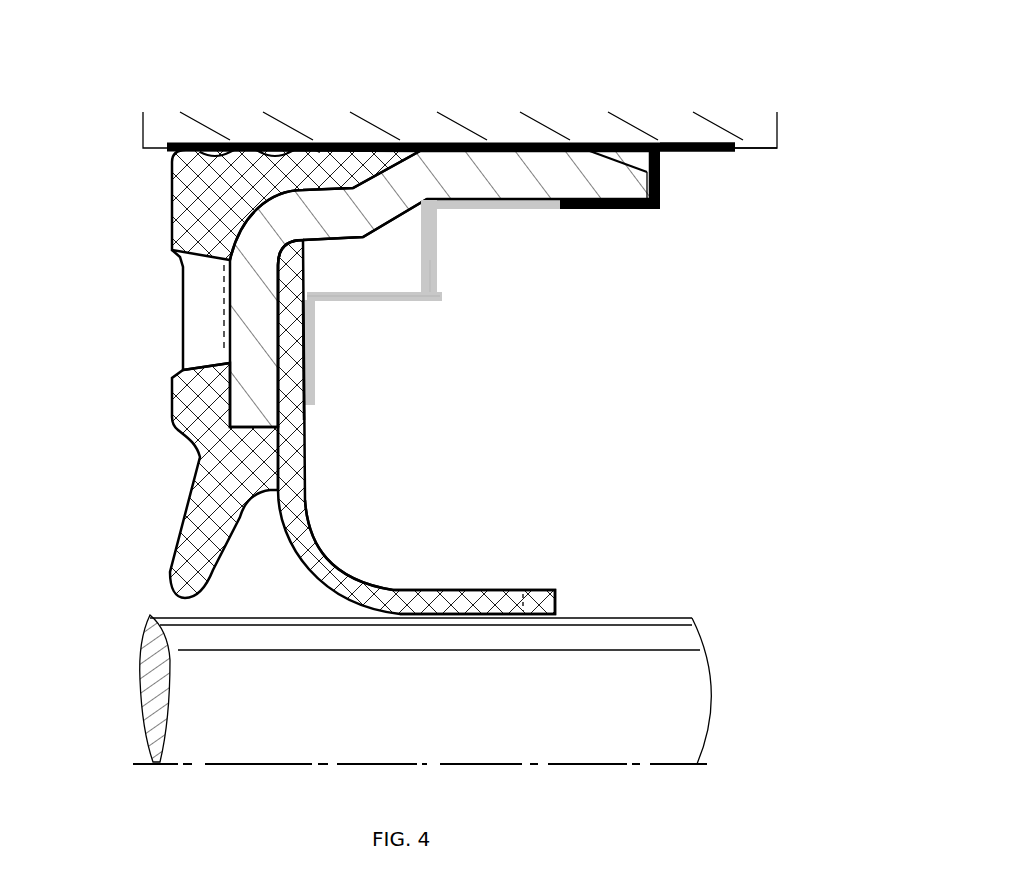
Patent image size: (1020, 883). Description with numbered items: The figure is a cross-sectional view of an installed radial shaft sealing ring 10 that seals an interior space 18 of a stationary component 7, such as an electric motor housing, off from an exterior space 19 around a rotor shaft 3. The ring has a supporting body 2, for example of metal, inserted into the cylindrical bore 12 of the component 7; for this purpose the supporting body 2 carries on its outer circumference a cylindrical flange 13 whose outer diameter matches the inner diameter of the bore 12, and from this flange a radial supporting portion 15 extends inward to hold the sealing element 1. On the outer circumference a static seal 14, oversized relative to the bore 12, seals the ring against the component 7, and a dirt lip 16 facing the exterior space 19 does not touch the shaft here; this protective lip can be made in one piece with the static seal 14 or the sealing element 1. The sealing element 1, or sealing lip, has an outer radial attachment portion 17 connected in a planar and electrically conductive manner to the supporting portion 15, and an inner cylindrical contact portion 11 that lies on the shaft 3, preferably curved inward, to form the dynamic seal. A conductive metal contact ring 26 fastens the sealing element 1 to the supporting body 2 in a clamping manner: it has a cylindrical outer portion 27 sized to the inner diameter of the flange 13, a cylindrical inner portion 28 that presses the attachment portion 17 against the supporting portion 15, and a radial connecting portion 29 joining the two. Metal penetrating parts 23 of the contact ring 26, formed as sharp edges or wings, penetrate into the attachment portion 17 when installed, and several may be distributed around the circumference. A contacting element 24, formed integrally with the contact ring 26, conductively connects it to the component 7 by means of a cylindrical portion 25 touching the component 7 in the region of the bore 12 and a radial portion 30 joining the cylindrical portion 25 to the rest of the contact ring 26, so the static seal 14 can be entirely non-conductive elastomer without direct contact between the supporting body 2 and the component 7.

The sealing element 1 is at (314, 522).
The supporting body 2 is at (363, 243).
The rotor shaft 3 is at (670, 700).
The component 7 is at (585, 130).
The radial shaft sealing ring 10 is at (466, 447).
The contact portion 11 is at (498, 600).
The cylindrical bore 12 is at (753, 150).
The cylindrical flange 13 is at (500, 180).
The static seal 14 is at (357, 157).
The radial supporting portion 15 is at (250, 315).
The dirt lip 16 is at (190, 535).
The attachment portion 17 is at (292, 452).
The interior space 18 is at (600, 404).
The exterior space 19 is at (85, 449).
The penetrating parts 23 is at (292, 337).
The contacting element 24 is at (652, 214).
The cylindrical portion 25 is at (708, 155).
The contact ring 26 is at (441, 260).
The cylindrical outer portion 27 is at (517, 203).
The cylindrical inner portion 28 is at (360, 298).
The radial connecting portion 29 is at (430, 232).
The radial portion 30 is at (665, 190).